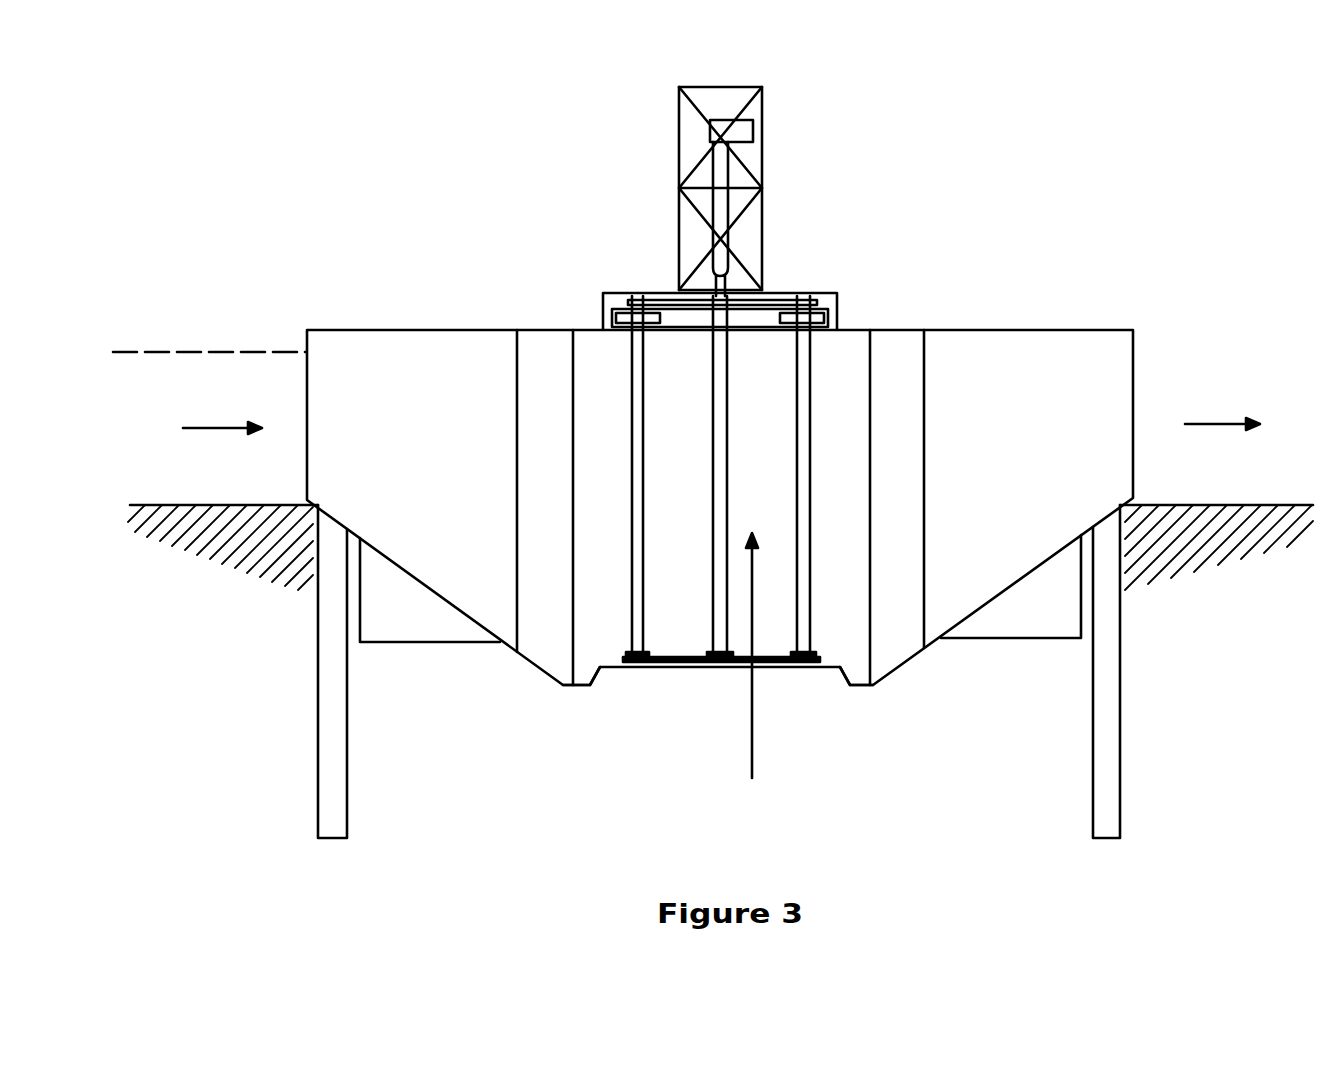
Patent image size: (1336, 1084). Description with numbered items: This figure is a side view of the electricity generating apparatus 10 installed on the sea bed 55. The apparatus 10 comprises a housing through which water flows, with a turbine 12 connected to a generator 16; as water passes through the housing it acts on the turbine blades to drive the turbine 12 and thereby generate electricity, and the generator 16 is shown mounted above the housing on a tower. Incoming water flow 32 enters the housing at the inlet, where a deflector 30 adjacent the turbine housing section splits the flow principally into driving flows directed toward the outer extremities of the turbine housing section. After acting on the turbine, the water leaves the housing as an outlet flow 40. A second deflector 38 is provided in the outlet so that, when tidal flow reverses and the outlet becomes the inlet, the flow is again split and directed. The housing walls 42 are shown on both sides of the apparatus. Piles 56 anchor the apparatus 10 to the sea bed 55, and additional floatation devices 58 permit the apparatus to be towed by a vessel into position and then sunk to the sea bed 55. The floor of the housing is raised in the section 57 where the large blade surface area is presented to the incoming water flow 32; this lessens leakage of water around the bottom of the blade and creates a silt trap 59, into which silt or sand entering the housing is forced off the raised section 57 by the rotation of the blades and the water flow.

The electricity generating apparatus 10 is at (713, 458).
The turbine 12 is at (752, 675).
The generator 16 is at (743, 133).
The deflector 30 is at (542, 363).
The water flow 32 is at (204, 428).
The second deflector 38 is at (891, 360).
The outlet flow 40 is at (1207, 424).
The tank side wall 42 is at (306, 388).
The sea bed 55 is at (217, 551).
The pile 56 is at (330, 805).
The raised section 57 is at (635, 667).
The floatation device 58 is at (417, 617).
The silt trap 59 is at (583, 687).